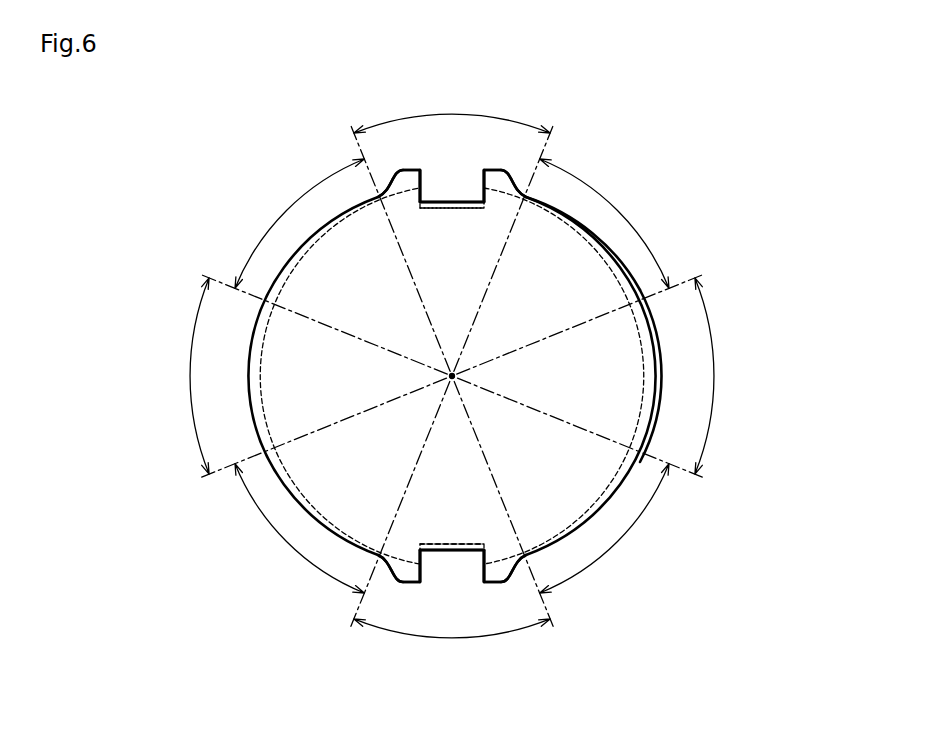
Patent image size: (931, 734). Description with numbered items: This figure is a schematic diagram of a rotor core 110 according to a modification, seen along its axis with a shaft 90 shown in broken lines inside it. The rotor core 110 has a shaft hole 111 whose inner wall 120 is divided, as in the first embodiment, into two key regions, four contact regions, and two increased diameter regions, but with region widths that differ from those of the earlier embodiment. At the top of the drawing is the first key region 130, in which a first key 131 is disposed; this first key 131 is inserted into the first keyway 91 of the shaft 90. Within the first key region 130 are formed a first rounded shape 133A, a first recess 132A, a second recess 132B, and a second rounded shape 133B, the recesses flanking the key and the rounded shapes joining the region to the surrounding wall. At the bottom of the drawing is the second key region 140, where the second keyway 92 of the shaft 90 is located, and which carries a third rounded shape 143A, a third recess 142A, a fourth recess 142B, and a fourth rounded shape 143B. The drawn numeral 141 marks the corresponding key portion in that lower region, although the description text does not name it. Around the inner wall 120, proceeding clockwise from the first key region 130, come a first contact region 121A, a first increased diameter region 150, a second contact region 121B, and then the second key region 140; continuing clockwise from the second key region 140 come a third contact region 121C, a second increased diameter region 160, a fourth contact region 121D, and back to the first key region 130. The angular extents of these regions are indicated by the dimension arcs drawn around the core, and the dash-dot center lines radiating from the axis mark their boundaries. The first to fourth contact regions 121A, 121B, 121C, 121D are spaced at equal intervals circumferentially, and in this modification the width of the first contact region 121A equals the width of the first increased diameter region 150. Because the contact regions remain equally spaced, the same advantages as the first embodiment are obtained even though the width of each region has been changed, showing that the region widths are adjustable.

The shaft 90 is at (259, 380).
The first keyway 91 is at (452, 208).
The second keyway 92 is at (452, 552).
The rotor core 110 is at (723, 120).
The shaft hole 111 is at (560, 226).
The inner wall 120 is at (652, 380).
The first contact region 121A is at (636, 234).
The second contact region 121B is at (636, 526).
The third contact region 121C is at (268, 526).
The fourth contact region 121D is at (268, 233).
The first key region 130 is at (452, 114).
The first key 131 is at (452, 176).
The first recess 132A is at (410, 172).
The second recess 132B is at (494, 172).
The first rounded shape 133A is at (388, 192).
The second rounded shape 133B is at (516, 192).
The second key region 140 is at (452, 642).
The second notch bottom surface 141 is at (452, 574).
The third recess 142A is at (494, 582).
The fourth recess 142B is at (410, 582).
The third rounded shape 143A is at (516, 568).
The fourth rounded shape 143B is at (388, 568).
The first increased diameter region 150 is at (713, 380).
The second increased diameter region 160 is at (192, 380).